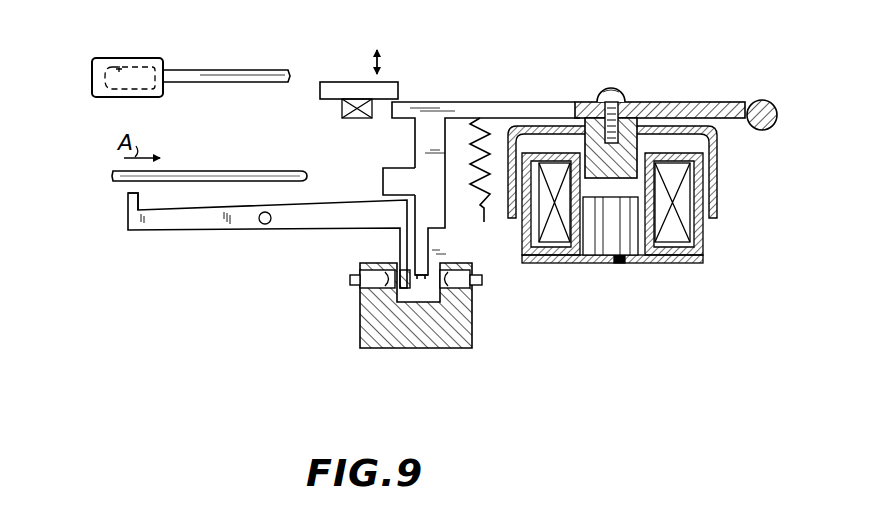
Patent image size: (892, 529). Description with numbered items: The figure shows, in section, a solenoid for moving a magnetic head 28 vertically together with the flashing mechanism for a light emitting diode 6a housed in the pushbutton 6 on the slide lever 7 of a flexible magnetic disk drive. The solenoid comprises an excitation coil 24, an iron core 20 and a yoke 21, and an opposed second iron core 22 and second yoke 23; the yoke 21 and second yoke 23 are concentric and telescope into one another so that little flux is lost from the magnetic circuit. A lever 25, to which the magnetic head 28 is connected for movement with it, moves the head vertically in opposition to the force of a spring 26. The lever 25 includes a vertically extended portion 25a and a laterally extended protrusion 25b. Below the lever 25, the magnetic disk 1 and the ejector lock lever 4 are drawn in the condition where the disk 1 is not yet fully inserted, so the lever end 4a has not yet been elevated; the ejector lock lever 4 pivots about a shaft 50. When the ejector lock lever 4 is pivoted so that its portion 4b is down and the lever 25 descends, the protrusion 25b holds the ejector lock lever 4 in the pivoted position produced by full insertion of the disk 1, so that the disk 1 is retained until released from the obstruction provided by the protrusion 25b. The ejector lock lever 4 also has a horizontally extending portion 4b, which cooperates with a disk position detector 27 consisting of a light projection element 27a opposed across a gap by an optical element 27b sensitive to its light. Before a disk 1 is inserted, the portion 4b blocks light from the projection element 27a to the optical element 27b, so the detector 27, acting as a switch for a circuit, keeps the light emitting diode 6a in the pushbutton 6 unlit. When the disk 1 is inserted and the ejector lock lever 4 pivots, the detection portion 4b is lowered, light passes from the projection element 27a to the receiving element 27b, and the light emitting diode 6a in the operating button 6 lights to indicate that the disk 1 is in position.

The magnetic disk 1 is at (232, 172).
The ejector lock lever 4 is at (190, 232).
The lever end 4a is at (127, 204).
The horizontally extending portion 4b is at (404, 290).
The pushbutton 6 is at (156, 62).
The light emitting diode 6a is at (121, 66).
The slide lever 7 is at (214, 76).
The iron core 20 is at (622, 264).
The yoke 21 is at (684, 264).
The second iron core 22 is at (652, 124).
The second yoke 23 is at (718, 187).
The excitation coil 24 is at (672, 228).
The lever 25 is at (533, 106).
The vertically extended portion 25a is at (420, 279).
The laterally extended protrusion 25b is at (383, 182).
The spring 26 is at (489, 187).
The disk position detector 27 is at (372, 340).
The light projection element 27a is at (372, 282).
The optical element 27b is at (473, 315).
The magnetic head 28 is at (348, 82).
The shaft 50 is at (265, 225).